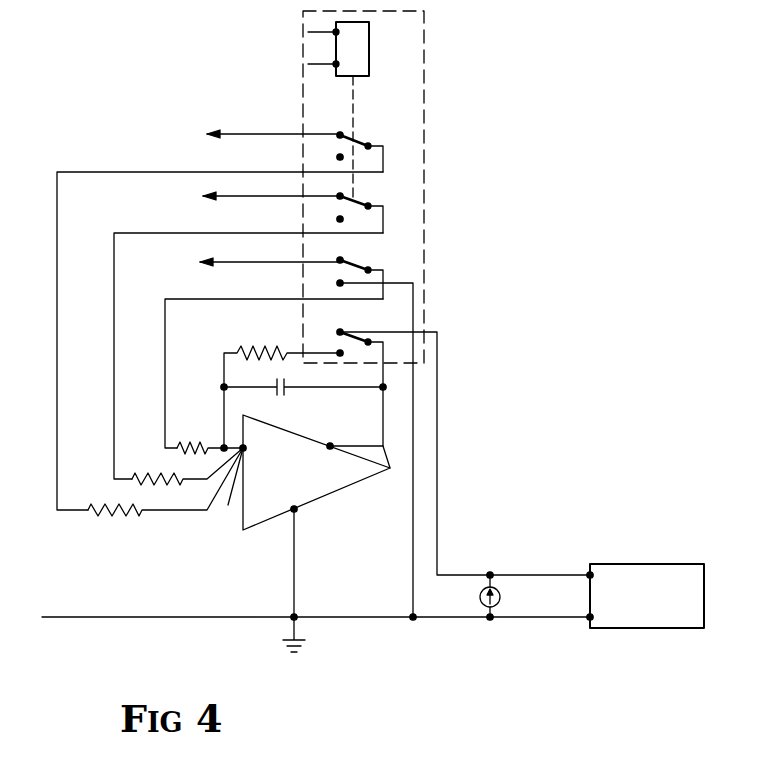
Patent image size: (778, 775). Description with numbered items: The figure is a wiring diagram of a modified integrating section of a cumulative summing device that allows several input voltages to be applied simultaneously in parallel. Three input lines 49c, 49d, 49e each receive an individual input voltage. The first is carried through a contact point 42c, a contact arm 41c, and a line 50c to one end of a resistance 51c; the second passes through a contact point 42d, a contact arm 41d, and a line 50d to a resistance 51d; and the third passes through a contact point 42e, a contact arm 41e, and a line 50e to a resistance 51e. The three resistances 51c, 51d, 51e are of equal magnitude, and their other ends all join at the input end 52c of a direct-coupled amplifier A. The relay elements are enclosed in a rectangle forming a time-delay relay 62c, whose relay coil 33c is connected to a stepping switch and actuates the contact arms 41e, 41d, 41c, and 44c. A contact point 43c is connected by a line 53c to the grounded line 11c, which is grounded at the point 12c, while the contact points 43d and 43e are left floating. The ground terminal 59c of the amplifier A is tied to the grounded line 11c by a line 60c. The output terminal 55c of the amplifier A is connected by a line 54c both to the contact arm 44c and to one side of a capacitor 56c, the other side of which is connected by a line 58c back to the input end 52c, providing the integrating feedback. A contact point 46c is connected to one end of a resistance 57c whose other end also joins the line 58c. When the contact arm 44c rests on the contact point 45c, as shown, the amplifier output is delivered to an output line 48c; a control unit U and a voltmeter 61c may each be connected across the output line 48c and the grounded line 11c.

The grounded line 11c is at (150, 620).
The ground point 12c is at (296, 620).
The relay coil 33c is at (369, 42).
The contact arm 41c is at (352, 267).
The contact arm 41d is at (352, 203).
The contact arm 41e is at (352, 141).
The contact point 42c is at (340, 257).
The contact point 42d is at (340, 193).
The contact point 42e is at (340, 132).
The contact point 43c is at (340, 283).
The contact point 43d is at (340, 219).
The contact point 43e is at (340, 157).
The contact arm 44c is at (356, 339).
The contact point 45c is at (340, 329).
The contact point 46c is at (341, 350).
The output line 48c is at (510, 575).
The line 49c is at (268, 262).
The line 49d is at (278, 196).
The line 49e is at (250, 134).
The line 50c is at (165, 426).
The line 50d is at (114, 447).
The line 50e is at (57, 436).
The resistance 51c is at (213, 444).
The resistance 51d is at (165, 476).
The resistance 51e is at (118, 508).
The input end 52c is at (223, 488).
The line 53c is at (413, 530).
The line 54c is at (374, 448).
The output terminal 55c is at (331, 444).
The capacitor 56c is at (285, 392).
The resistance 57c is at (268, 346).
The line 58c is at (224, 424).
The ground terminal 59c is at (296, 512).
The line 60c is at (294, 572).
The voltmeter 61c is at (480, 598).
The time-delay relay 62c is at (428, 84).
The direct-coupled amplifier A is at (246, 528).
The control unit U is at (642, 564).